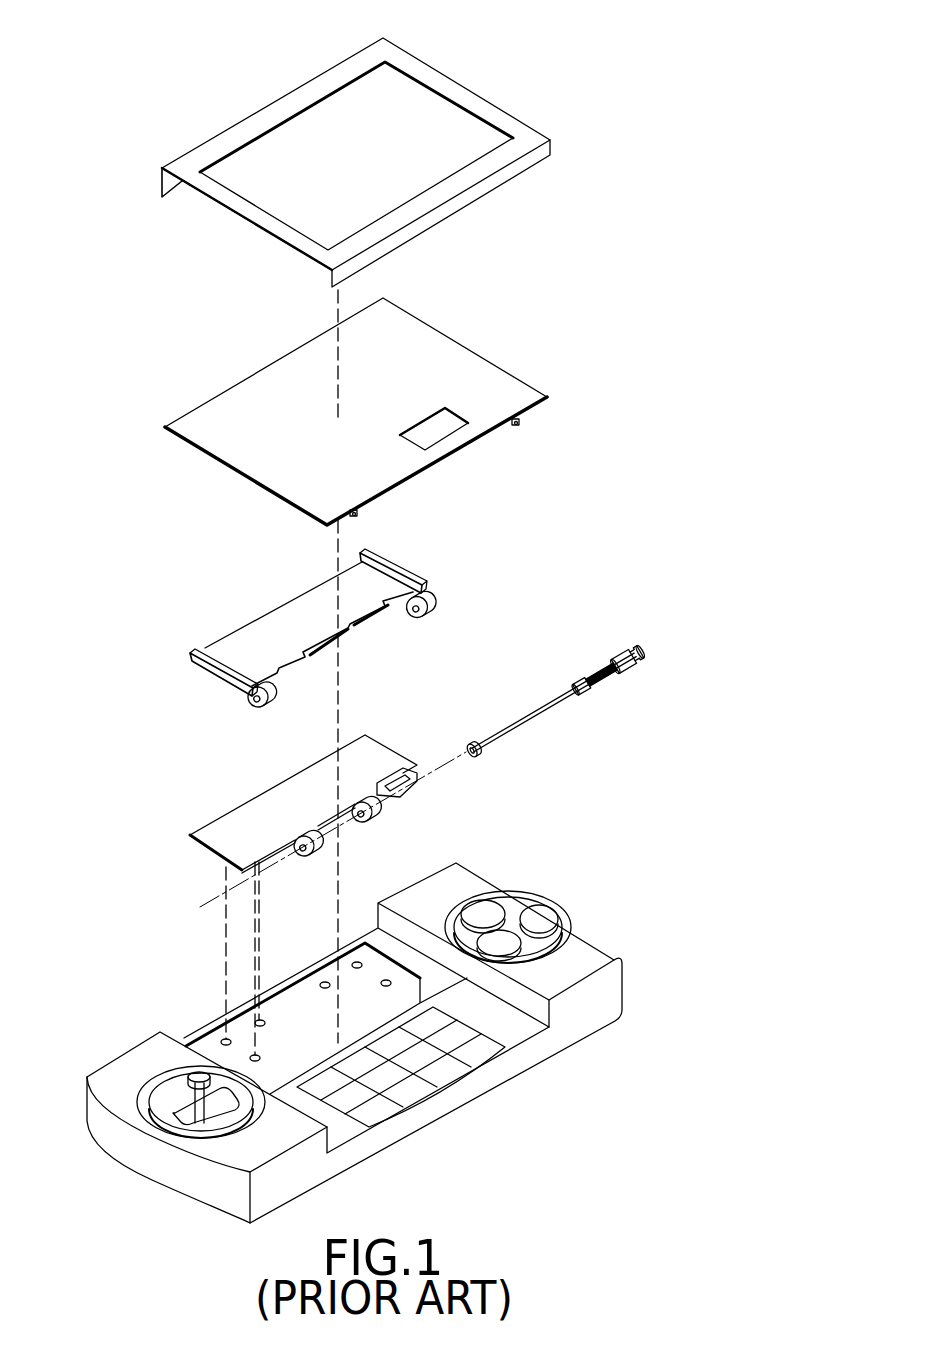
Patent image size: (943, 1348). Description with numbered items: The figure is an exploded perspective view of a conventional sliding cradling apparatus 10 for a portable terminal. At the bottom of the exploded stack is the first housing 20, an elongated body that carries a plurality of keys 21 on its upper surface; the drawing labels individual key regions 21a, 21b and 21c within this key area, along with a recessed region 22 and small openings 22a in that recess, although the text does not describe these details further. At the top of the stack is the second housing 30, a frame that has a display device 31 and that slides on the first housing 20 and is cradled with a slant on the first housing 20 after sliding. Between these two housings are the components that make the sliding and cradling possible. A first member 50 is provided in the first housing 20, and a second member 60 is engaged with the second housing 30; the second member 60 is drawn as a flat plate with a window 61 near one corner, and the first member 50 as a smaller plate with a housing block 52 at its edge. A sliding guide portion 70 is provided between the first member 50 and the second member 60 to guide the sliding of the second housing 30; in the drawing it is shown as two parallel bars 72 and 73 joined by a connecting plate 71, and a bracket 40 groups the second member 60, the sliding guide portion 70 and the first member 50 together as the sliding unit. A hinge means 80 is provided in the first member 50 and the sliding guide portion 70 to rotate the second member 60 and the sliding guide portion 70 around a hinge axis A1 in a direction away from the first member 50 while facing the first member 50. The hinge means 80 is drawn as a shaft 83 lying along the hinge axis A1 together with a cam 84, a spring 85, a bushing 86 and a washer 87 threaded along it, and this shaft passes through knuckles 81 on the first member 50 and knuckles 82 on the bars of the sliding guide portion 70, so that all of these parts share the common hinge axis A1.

The sliding cradling apparatus 10 is at (575, 59).
The first housing 20 is at (144, 1174).
The keys 21 is at (554, 1223).
The keypad 21a is at (404, 1093).
The joystick 21b is at (212, 1116).
The function buttons 21c is at (500, 946).
The seating recess 22 is at (285, 1095).
The coupling holes 22a is at (260, 1020).
The second housing 30 is at (483, 97).
The display device 31 is at (407, 90).
The sliding unit 40 is at (63, 458).
The first member 50 is at (189, 825).
The hinge housing 52 is at (398, 797).
The second member 60 is at (185, 447).
The window 61 is at (430, 430).
The sliding guide portion 70 is at (110, 562).
The connecting plate 71 is at (233, 650).
The upper bar 72 is at (368, 563).
The lower bar 73 is at (232, 688).
The hinge means 80 is at (698, 522).
The hinge knuckles of fixed plate 81 is at (313, 825).
The hinge knuckles of bracket 82 is at (271, 697).
The hinge shaft 83 is at (535, 708).
The hinge cam 84 is at (630, 670).
The spring 85 is at (617, 657).
The bushing 86 is at (597, 683).
The washer 87 is at (477, 752).
The hinge axis A1 is at (240, 883).